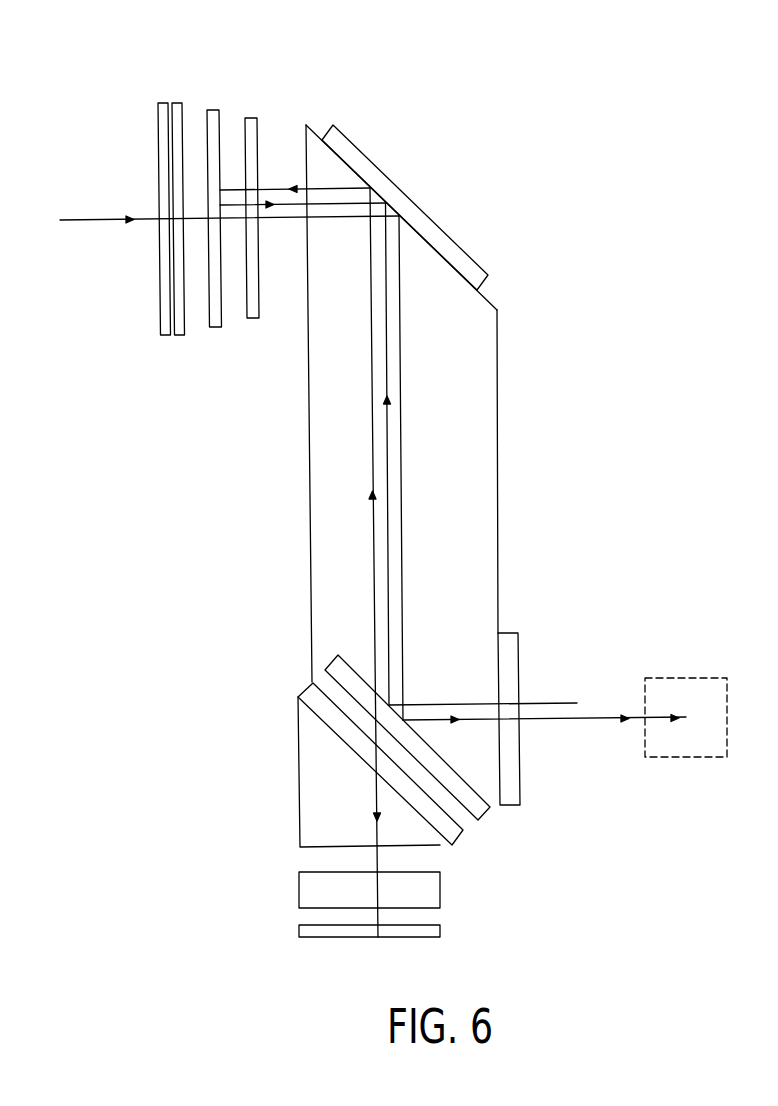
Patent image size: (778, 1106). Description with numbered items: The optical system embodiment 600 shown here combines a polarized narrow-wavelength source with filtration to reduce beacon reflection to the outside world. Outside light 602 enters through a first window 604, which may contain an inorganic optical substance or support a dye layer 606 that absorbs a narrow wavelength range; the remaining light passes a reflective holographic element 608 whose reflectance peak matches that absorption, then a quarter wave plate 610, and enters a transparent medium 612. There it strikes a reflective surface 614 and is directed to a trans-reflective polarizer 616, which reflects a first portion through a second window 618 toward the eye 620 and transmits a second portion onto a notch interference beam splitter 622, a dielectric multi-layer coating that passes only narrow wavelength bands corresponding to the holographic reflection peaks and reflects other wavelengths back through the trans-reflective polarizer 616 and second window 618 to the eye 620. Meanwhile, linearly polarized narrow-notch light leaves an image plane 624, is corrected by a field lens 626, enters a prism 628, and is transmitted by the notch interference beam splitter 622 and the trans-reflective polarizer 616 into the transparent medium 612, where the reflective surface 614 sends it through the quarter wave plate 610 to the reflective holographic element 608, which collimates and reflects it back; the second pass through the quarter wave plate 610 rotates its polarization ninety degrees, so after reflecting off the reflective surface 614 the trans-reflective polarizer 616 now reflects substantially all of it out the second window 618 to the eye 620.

The optical system embodiment 600 is at (569, 510).
The outside light 602 is at (229, 205).
The first window 604 is at (163, 103).
The dye layer 606 is at (174, 103).
The reflective holographic element 608 is at (211, 110).
The quarter wave plate 610 is at (249, 118).
The transparent medium 612 is at (349, 256).
The reflective surface 614 is at (460, 253).
The trans-reflective polarizer 616 is at (352, 662).
The second window 618 is at (520, 792).
The eye 620 is at (686, 697).
The notch interference beam splitter 622 is at (300, 703).
The image plane 624 is at (442, 928).
The field lens 626 is at (442, 885).
The prism 628 is at (318, 817).